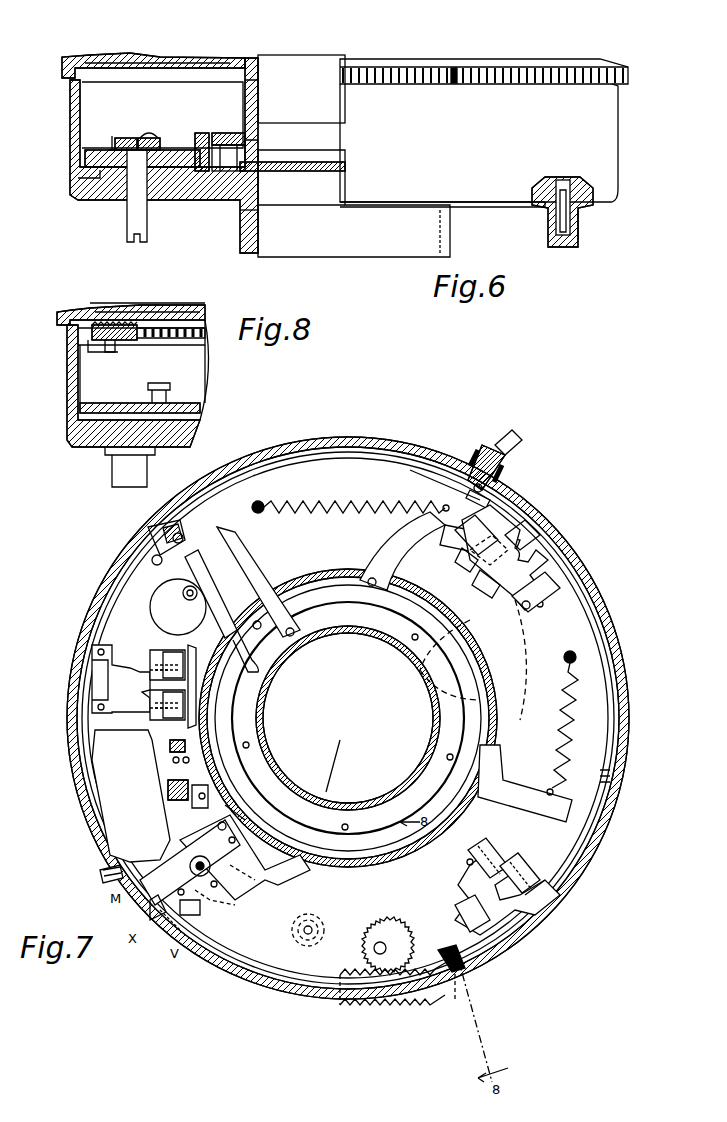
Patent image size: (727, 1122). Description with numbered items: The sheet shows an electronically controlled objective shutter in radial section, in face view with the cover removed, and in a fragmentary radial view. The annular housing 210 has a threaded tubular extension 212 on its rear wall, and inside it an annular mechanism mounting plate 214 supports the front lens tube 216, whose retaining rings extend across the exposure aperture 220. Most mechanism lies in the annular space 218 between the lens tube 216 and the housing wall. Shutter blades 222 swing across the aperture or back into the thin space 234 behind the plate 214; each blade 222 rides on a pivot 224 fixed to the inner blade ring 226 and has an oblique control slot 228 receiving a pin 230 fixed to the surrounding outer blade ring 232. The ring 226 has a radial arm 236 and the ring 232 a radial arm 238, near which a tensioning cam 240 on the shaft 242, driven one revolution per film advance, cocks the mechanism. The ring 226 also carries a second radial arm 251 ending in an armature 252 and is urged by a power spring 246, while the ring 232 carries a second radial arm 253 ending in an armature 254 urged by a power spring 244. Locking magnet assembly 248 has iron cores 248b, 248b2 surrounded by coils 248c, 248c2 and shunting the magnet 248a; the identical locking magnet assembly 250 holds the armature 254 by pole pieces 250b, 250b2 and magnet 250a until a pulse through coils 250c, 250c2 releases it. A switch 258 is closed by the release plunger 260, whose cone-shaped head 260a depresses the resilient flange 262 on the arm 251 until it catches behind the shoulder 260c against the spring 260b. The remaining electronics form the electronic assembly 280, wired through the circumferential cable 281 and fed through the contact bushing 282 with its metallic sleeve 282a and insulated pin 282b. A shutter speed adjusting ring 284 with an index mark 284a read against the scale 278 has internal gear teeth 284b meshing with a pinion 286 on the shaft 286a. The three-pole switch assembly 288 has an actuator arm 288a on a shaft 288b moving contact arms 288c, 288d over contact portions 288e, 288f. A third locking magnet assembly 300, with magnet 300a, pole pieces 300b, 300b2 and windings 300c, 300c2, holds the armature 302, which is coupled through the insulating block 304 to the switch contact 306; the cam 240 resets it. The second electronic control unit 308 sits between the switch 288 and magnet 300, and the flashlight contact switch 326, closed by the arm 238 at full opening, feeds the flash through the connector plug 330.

In FIG. 6, the housing 210 is at (72, 108).
In FIG. 8, the housing 210 is at (70, 388).
In FIG. 7, the housing 210 is at (372, 800).
In FIG. 6, the tubular extension 212 is at (244, 237).
In FIG. 6, the mechanism mounting plate 214 is at (72, 175).
In FIG. 8, the mechanism mounting plate 214 is at (196, 415).
In FIG. 6, the front lens tube 216 is at (255, 110).
In FIG. 6, the annular space 218 is at (168, 95).
In FIG. 8, the annular space 218 is at (185, 347).
In FIG. 6, the exposure aperture 220 is at (300, 70).
In FIG. 6, the shutter blade 222 is at (308, 178).
In FIG. 7, the shutter blade 222 is at (520, 716).
In FIG. 6, the pivot 224 is at (250, 160).
In FIG. 7, the pivot 224 is at (413, 640).
In FIG. 6, the inner blade ring 226 is at (227, 133).
In FIG. 7, the inner blade ring 226 is at (336, 632).
In FIG. 7, the control slot 228 is at (392, 622).
In FIG. 6, the pin 230 is at (218, 172).
In FIG. 7, the pin 230 is at (415, 607).
In FIG. 6, the outer blade ring 232 is at (200, 133).
In FIG. 7, the outer blade ring 232 is at (342, 590).
In FIG. 6, the thin space 234 is at (176, 170).
In FIG. 6, the radial arm 236 is at (122, 137).
In FIG. 7, the radial arm 236 is at (290, 574).
In FIG. 6, the radial arm 238 is at (110, 145).
In FIG. 7, the radial arm 238 is at (205, 560).
In FIG. 6, the tensioning cam 240 is at (150, 136).
In FIG. 7, the tensioning cam 240 is at (195, 617).
In FIG. 6, the shaft 242 is at (135, 210).
In FIG. 7, the power spring 244 is at (570, 710).
In FIG. 7, the power spring 246 is at (318, 503).
In FIG. 7, the locking magnet assembly 248 is at (548, 553).
In FIG. 7, the magnet 248a is at (545, 600).
In FIG. 7, the iron core 248b is at (500, 510).
In FIG. 7, the iron core 248b2 is at (462, 560).
In FIG. 7, the coil 248c is at (530, 535).
In FIG. 7, the coil 248c2 is at (498, 585).
In FIG. 7, the locking magnet assembly 250 is at (503, 915).
In FIG. 7, the magnet 250a is at (468, 915).
In FIG. 7, the pole piece 250b is at (486, 840).
In FIG. 7, the pole piece 250b2 is at (528, 862).
In FIG. 7, the coil 250c is at (468, 858).
In FIG. 7, the coil 250c2 is at (530, 890).
In FIG. 7, the second radial arm 251 is at (382, 540).
In FIG. 7, the armature 252 is at (450, 535).
In FIG. 7, the second radial arm 253 is at (535, 757).
In FIG. 7, the armature 254 is at (552, 789).
In FIG. 7, the switch 258 is at (455, 468).
In FIG. 7, the release plunger 260 is at (514, 435).
In FIG. 7, the cone-shaped head 260a is at (478, 484).
In FIG. 7, the spring 260b is at (492, 462).
In FIG. 7, the shoulder 260c is at (510, 478).
In FIG. 7, the resilient flange 262 is at (500, 497).
In FIG. 6, the shutter speed scale 278 is at (438, 108).
In FIG. 8, the electronic assembly 280 is at (190, 392).
In FIG. 7, the electronic assembly 280 is at (322, 975).
In FIG. 7, the cable 281 is at (606, 738).
In FIG. 6, the contact bushing 282 is at (575, 263).
In FIG. 8, the contact bushing 282 is at (98, 474).
In FIG. 7, the contact bushing 282 is at (304, 934).
In FIG. 6, the metallic sleeve 282a is at (582, 228).
In FIG. 6, the metallic pin 282b is at (557, 228).
In FIG. 6, the shutter speed adjusting ring 284 is at (74, 58).
In FIG. 8, the shutter speed adjusting ring 284 is at (78, 308).
In FIG. 7, the shutter speed adjusting ring 284 is at (440, 1000).
In FIG. 6, the index mark 284a is at (455, 67).
In FIG. 8, the internal gear teeth 284b is at (105, 300).
In FIG. 7, the internal gear teeth 284b is at (425, 962).
In FIG. 8, the pinion 286 is at (128, 342).
In FIG. 7, the pinion 286 is at (370, 928).
In FIG. 8, the shaft 286a is at (86, 345).
In FIG. 7, the three-pole switch assembly 288 is at (240, 880).
In FIG. 7, the switch actuator arm 288a is at (150, 920).
In FIG. 7, the shaft 288b is at (258, 882).
In FIG. 7, the contact arm 288c is at (230, 910).
In FIG. 7, the contact arm 288d is at (240, 870).
In FIG. 7, the contact portions 288e is at (228, 905).
In FIG. 7, the contact portions 288f is at (255, 835).
In FIG. 7, the locking magnet assembly 300 is at (131, 658).
In FIG. 7, the magnet 300a is at (92, 674).
In FIG. 7, the pole piece 300b is at (190, 670).
In FIG. 7, the pole piece 300b2 is at (190, 710).
In FIG. 7, the winding 300c is at (165, 650).
In FIG. 7, the winding 300c2 is at (178, 700).
In FIG. 7, the armature 302 is at (197, 708).
In FIG. 7, the insulating block 304 is at (170, 748).
In FIG. 7, the switch contact 306 is at (168, 788).
In FIG. 7, the second electronic control unit 308 is at (92, 770).
In FIG. 7, the flashlight contact switch 326 is at (145, 540).
In FIG. 7, the connector plug 330 is at (100, 872).